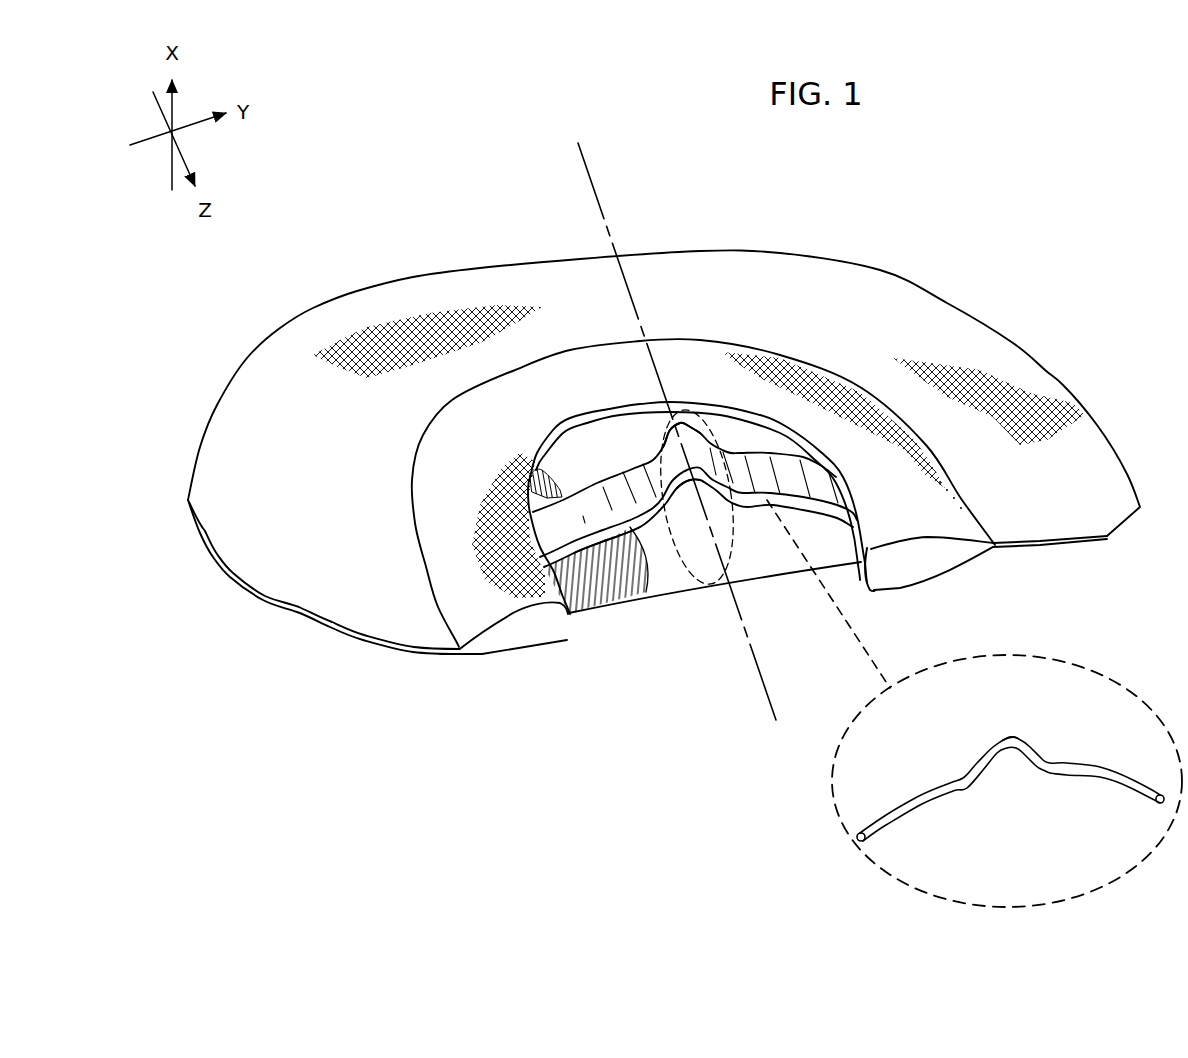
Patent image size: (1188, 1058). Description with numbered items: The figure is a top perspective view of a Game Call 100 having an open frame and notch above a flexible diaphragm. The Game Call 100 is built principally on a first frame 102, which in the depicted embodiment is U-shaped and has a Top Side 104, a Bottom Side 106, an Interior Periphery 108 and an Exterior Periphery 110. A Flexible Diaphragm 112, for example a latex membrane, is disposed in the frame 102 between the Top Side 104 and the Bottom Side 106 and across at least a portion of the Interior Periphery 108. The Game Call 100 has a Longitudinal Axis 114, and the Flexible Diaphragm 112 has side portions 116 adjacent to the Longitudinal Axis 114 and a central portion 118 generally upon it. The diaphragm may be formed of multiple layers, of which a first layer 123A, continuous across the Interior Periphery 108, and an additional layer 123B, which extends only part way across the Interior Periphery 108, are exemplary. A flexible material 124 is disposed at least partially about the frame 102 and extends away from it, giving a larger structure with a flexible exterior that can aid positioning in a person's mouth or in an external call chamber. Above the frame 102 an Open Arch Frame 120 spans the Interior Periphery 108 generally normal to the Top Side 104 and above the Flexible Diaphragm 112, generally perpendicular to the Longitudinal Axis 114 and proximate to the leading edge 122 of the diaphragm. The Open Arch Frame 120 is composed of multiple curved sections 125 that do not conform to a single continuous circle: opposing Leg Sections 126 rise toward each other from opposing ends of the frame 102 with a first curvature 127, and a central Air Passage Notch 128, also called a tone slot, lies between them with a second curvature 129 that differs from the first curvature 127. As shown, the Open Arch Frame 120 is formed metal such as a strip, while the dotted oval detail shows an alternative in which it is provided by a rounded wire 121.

The Game Call 100 is at (356, 209).
The first frame 102 is at (519, 626).
The Top Side 104 is at (885, 527).
The Bottom Side 106 is at (891, 590).
The Interior Periphery 108 is at (861, 574).
The Exterior Periphery 110 is at (447, 630).
The Flexible Diaphragm 112 is at (765, 588).
The Longitudinal Axis 114 is at (686, 445).
The side portions 116 is at (557, 477).
The central portion 118 is at (703, 552).
The Open Arch Frame 120 is at (755, 410).
The rounded wire 121 is at (984, 753).
The leading edge 122 is at (670, 590).
The first layer 123A is at (807, 556).
The additional layer 123B is at (603, 597).
The flexible material 124 is at (270, 535).
The curved sections 125 is at (667, 445).
The Leg Section 126 is at (559, 513).
The first curvature 127 is at (621, 534).
The Air Passage Notch 128 is at (692, 438).
The second curvature 129 is at (692, 489).